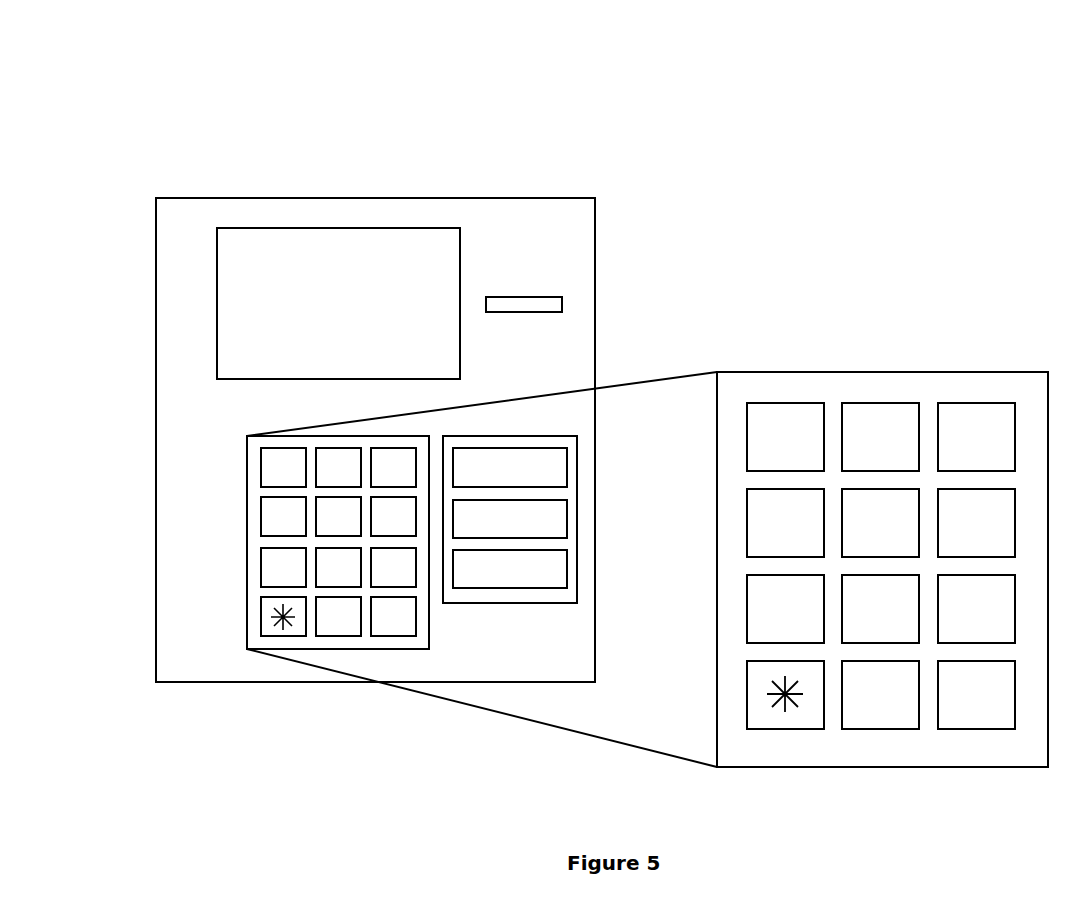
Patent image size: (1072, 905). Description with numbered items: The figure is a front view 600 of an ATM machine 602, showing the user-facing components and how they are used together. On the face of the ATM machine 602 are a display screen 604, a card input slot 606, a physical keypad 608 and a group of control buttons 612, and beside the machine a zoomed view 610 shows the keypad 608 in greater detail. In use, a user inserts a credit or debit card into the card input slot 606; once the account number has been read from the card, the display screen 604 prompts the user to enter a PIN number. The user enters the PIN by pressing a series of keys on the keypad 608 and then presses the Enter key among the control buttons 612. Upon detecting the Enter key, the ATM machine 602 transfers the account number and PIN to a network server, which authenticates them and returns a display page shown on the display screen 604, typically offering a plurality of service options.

The front view of ATM machine 600 is at (644, 70).
The ATM machine 602 is at (457, 190).
The display screen 604 is at (339, 220).
The card input slot 606 is at (528, 289).
The physical keypad 608 is at (239, 513).
The zoomed view 610 is at (885, 364).
The control buttons 612 is at (575, 518).